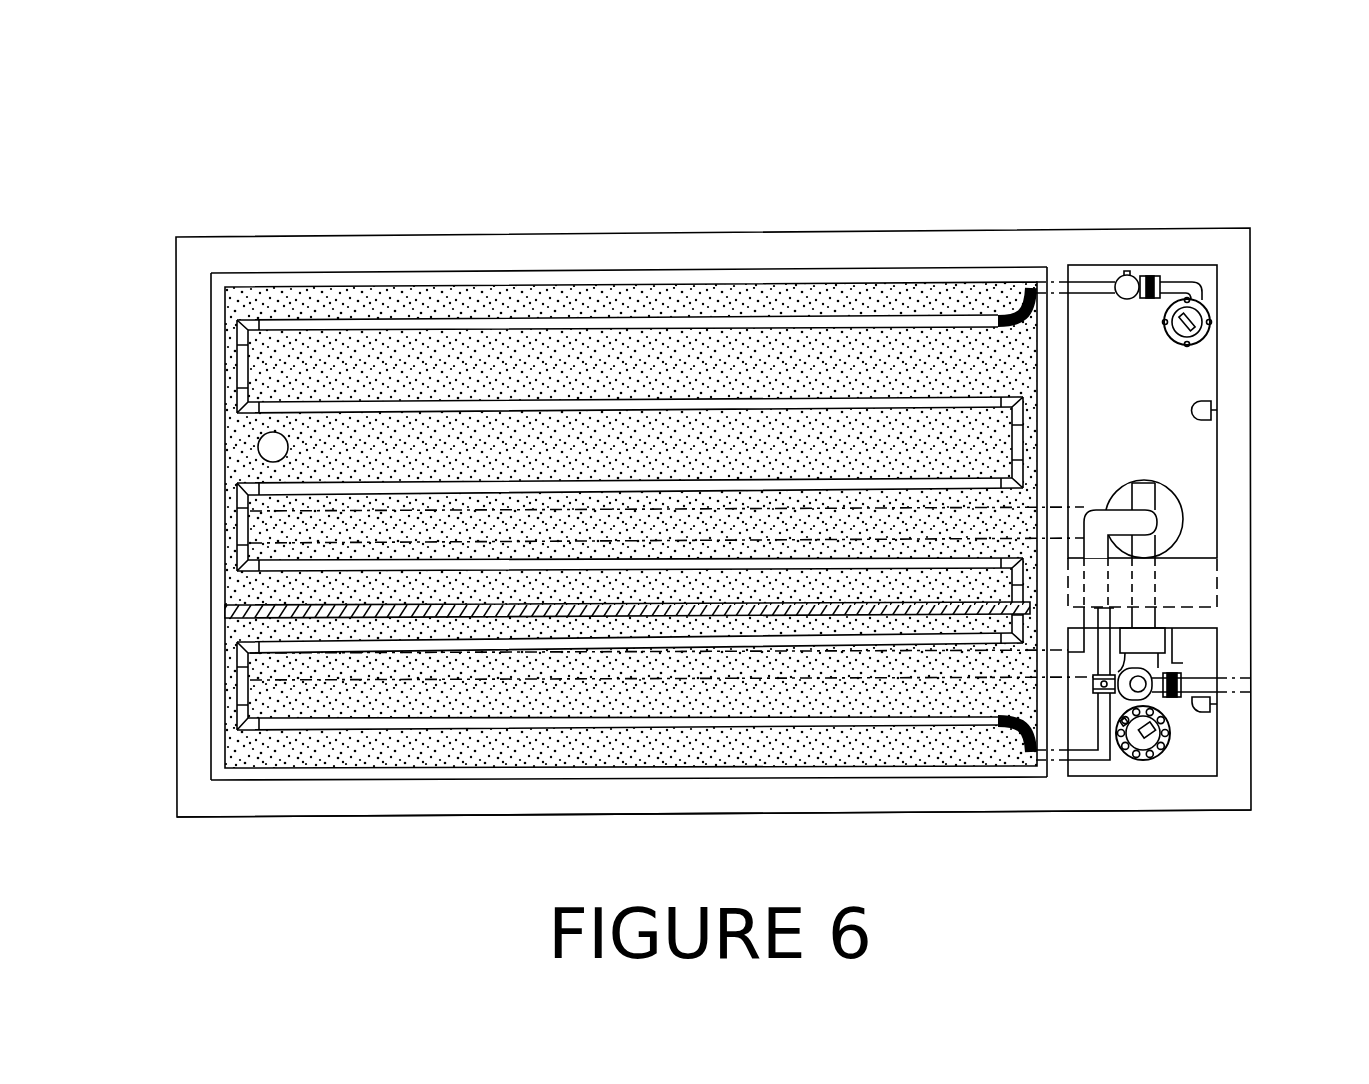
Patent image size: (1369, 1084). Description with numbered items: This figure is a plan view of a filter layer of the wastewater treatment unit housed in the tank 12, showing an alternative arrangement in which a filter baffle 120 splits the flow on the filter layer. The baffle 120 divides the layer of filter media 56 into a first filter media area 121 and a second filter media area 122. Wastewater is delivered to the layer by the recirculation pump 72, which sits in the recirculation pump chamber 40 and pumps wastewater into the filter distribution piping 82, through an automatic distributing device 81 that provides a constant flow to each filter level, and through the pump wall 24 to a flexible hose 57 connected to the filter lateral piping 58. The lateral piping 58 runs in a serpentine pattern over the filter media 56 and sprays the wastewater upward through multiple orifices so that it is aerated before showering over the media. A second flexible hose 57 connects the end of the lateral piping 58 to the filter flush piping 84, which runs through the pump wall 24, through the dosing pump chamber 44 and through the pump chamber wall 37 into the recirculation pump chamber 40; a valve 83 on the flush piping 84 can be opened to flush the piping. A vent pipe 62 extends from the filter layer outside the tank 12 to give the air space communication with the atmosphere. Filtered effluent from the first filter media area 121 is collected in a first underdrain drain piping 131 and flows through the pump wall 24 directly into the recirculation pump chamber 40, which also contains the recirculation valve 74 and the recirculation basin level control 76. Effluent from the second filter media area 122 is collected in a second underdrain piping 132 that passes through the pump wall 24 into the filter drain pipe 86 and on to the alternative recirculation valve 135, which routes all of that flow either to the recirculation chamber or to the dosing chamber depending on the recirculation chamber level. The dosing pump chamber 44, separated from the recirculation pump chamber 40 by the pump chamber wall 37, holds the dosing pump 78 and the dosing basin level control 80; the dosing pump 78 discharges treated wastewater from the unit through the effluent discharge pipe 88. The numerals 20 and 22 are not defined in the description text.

The tank 12 is at (455, 820).
The solar heater assembly 20 is at (1168, 210).
The housing 22 is at (618, 218).
The pump wall 24 is at (1068, 500).
The pump chamber wall 37 is at (1193, 650).
The recirculation pump chamber 40 is at (1156, 393).
The dosing pump chamber 44 is at (1208, 767).
The filter media 56 is at (644, 456).
The flexible hose 57 is at (1010, 292).
The filter lateral piping 58 is at (385, 322).
The vent pipe 62 is at (250, 452).
The recirculation pump 72 is at (1210, 342).
The recirculation valve 74 is at (1166, 514).
The recirculation basin level control 76 is at (1213, 412).
The dosing pump 78 is at (1148, 762).
The dosing basin level control 80 is at (1213, 705).
The automatic distributing device 81 is at (1125, 276).
The filter distribution piping 82 is at (1087, 278).
The valve 83 is at (1098, 692).
The filter flush piping 84 is at (1105, 762).
The filter drain pipe 86 is at (1078, 506).
The effluent discharge pipe 88 is at (1232, 690).
The filter baffle 120 is at (512, 607).
The first filter media area 121 is at (515, 303).
The second filter media area 122 is at (362, 760).
The first underdrain drain piping 131 is at (298, 535).
The second underdrain piping 132 is at (665, 688).
The alternative recirculation valve 135 is at (1183, 537).